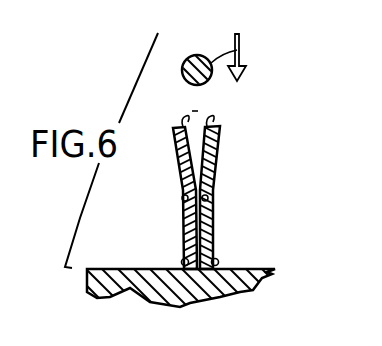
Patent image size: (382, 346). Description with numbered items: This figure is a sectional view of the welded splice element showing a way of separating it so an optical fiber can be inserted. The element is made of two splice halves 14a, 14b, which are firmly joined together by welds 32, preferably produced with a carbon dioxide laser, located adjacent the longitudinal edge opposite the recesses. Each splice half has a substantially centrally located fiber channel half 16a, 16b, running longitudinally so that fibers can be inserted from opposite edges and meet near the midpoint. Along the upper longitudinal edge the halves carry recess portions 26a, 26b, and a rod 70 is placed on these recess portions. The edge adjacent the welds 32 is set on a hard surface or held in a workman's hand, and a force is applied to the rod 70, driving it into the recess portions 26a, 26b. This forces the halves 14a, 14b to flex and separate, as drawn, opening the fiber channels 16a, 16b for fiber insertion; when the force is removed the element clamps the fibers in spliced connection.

The rod 70 is at (203, 55).
The splice half 14a is at (245, 198).
The splice half 14b is at (162, 202).
The fiber channel half 16a is at (209, 196).
The fiber channel half 16b is at (181, 195).
The recess portion 26a is at (207, 126).
The recess portion 26b is at (184, 121).
The weld 32 is at (181, 262).